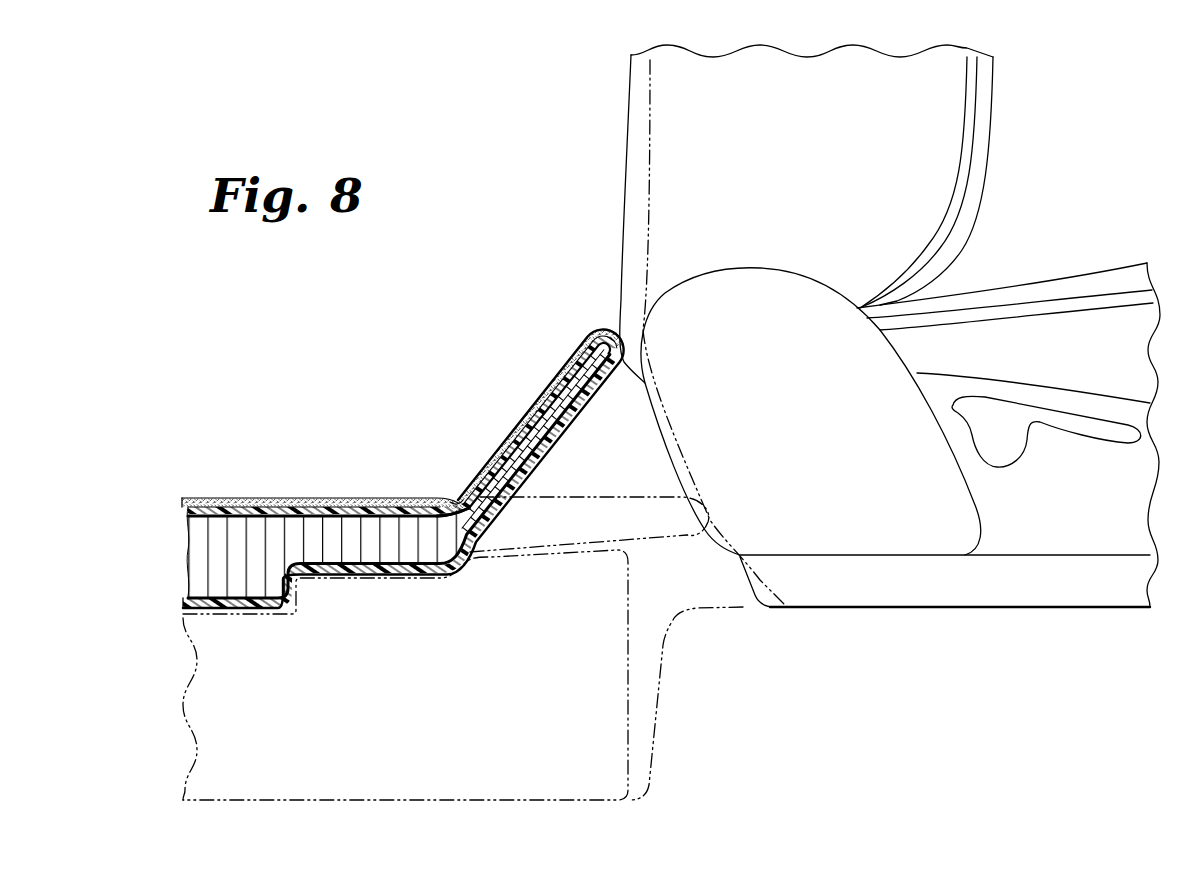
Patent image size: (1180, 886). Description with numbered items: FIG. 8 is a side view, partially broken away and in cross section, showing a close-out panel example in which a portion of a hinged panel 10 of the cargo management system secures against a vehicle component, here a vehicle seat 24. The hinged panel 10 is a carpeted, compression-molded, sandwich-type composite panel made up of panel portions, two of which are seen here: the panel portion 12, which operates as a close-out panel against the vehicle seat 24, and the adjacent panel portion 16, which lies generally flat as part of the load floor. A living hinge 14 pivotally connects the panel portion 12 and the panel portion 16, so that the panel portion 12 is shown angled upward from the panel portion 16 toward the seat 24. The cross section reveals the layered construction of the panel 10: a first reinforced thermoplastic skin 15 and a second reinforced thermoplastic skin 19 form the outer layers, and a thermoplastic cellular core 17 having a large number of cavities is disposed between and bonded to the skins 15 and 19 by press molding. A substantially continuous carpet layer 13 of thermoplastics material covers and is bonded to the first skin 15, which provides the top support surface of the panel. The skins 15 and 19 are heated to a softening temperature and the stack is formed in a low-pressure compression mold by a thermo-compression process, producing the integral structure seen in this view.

The hinged panel 10 is at (558, 292).
The panel portion 12 is at (530, 403).
The carpet layer 13 is at (183, 500).
The living hinge 14 is at (457, 498).
The first reinforced thermoplastic skin 15 is at (183, 513).
The panel portion 16 is at (320, 497).
The thermoplastic cellular core 17 is at (183, 555).
The second reinforced thermoplastic skin 19 is at (183, 602).
The vehicle seat 24 is at (622, 188).